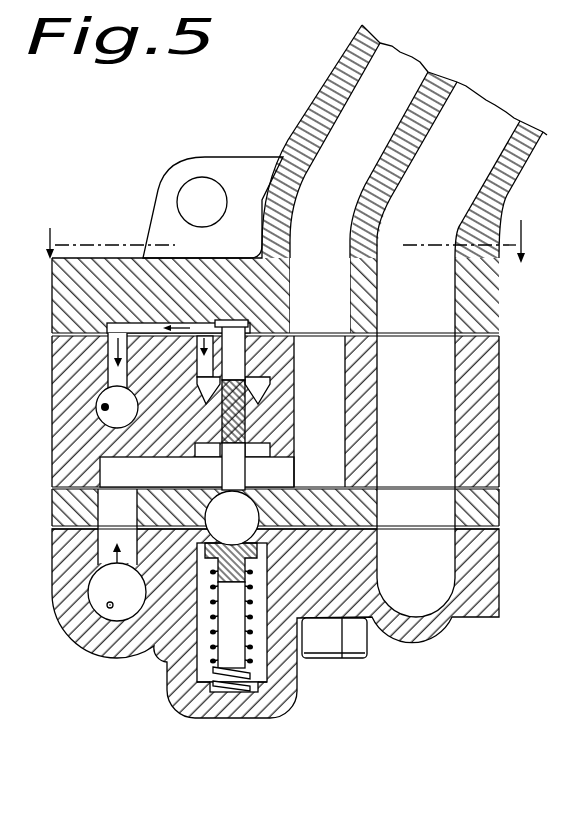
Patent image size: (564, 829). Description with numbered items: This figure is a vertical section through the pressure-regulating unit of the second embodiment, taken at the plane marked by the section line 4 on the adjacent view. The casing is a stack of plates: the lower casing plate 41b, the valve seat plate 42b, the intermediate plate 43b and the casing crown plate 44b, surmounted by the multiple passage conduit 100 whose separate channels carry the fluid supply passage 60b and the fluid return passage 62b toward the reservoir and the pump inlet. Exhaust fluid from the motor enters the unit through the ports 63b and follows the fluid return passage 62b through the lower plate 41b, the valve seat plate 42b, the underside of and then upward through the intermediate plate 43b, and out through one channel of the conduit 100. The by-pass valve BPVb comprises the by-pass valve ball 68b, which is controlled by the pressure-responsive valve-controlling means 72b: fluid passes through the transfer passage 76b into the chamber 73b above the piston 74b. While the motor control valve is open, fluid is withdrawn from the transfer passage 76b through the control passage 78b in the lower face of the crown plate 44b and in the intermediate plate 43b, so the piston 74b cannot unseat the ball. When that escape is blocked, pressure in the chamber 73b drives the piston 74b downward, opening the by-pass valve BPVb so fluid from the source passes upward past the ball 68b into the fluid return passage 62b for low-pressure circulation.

The multiple passage conduit 100 is at (323, 86).
The fluid return passage 62b is at (328, 437).
The fluid supply passage 60b is at (420, 437).
The casing crown plate 44b is at (486, 302).
The intermediate plate 43b is at (490, 439).
The valve seat plate 42b is at (492, 507).
The lower casing plate 41b is at (490, 571).
The transfer passage 76b is at (237, 320).
The control passage 78b is at (104, 396).
The chamber 73b is at (198, 373).
The pressure-responsive valve-controlling means 72b is at (222, 396).
The piston 74b is at (197, 430).
The by-pass valve ball 68b is at (258, 488).
The ports 63b is at (84, 593).
The by-pass valve BPVb is at (247, 505).
The section line 4- 4 is at (285, 241).